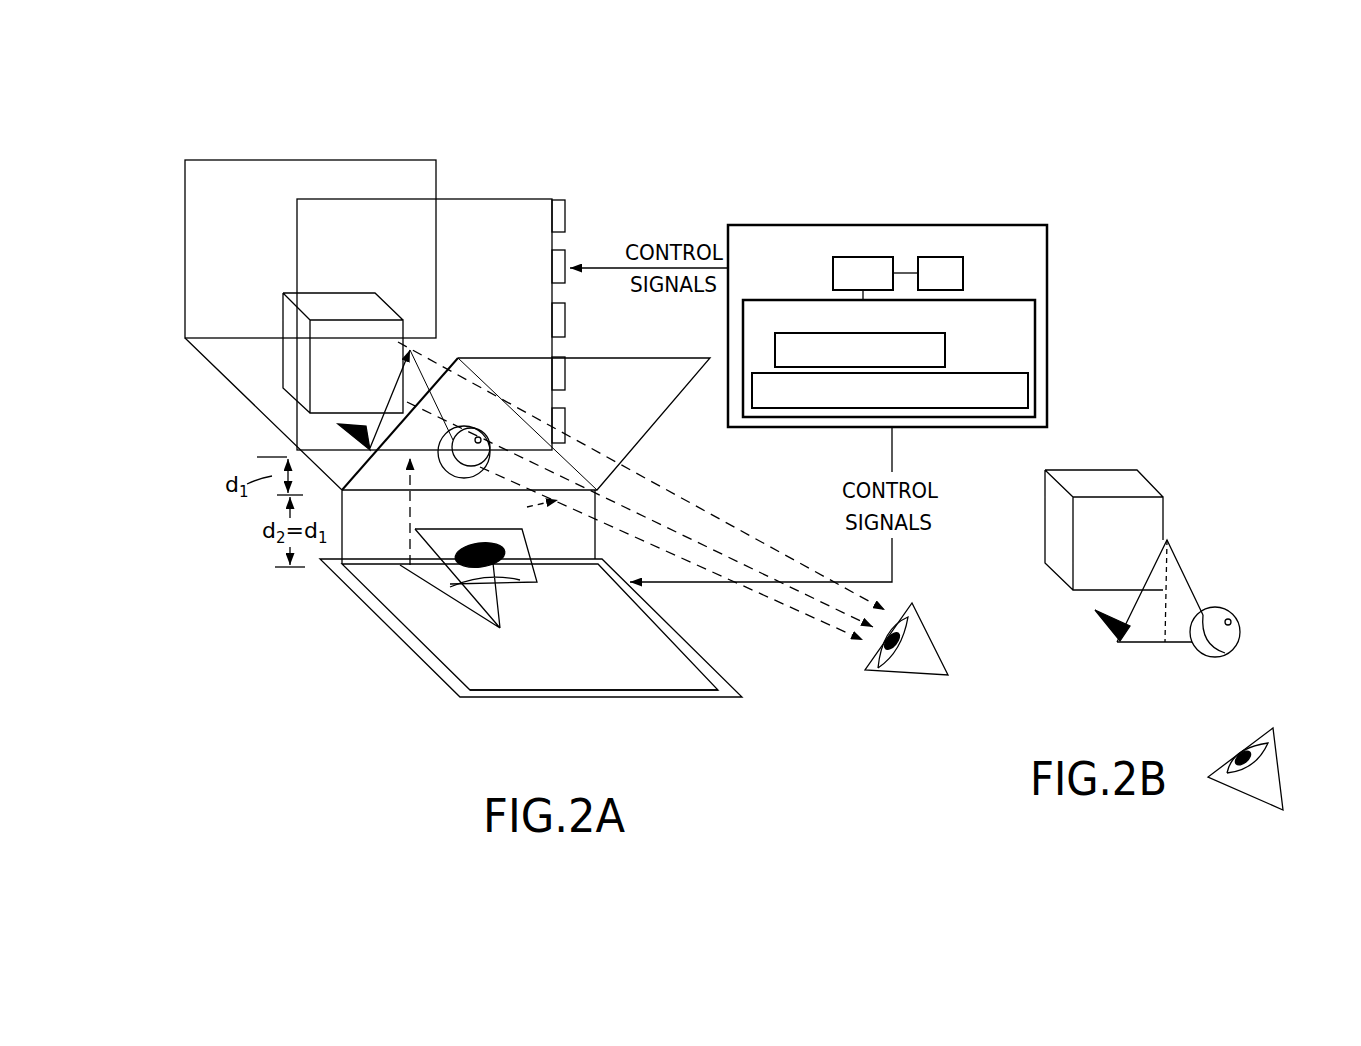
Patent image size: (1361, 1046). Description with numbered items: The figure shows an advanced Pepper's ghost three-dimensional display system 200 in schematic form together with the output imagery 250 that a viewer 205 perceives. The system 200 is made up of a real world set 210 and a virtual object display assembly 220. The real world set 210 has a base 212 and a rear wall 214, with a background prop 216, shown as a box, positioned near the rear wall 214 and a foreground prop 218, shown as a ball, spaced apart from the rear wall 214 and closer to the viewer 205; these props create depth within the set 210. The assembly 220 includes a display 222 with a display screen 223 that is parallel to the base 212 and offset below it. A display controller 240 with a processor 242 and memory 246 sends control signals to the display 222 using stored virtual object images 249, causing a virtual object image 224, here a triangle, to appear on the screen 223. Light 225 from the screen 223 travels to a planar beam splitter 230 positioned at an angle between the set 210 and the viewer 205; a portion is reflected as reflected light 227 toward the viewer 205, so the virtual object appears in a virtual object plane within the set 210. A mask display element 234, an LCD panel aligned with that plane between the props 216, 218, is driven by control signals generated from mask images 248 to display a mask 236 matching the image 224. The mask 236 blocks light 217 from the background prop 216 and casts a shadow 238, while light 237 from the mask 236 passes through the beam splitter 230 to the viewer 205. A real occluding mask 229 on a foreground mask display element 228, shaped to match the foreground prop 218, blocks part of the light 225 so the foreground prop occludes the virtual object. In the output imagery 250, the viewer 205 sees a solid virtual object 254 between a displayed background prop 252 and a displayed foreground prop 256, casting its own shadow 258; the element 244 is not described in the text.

In FIG. 2A, the 3D display system 200 is at (182, 147).
In FIG. 2A, the viewer 205 is at (930, 612).
In FIG. 2B, the viewer 205 is at (1245, 795).
In FIG. 2A, the real world set 210 is at (162, 280).
In FIG. 2A, the base 212 is at (213, 368).
In FIG. 2A, the rear wall 214 is at (185, 240).
In FIG. 2A, the background prop 216 is at (350, 293).
In FIG. 2A, the light 217 is at (735, 527).
In FIG. 2A, the foreground prop 218 is at (490, 438).
In FIG. 2A, the virtual object display assembly 220 is at (345, 633).
In FIG. 2A, the display 222 is at (738, 680).
In FIG. 2A, the display screen 223 is at (625, 680).
In FIG. 2A, the virtual object image 224 is at (502, 628).
In FIG. 2A, the light 225 is at (408, 512).
In FIG. 2A, the reflected light 227 is at (517, 509).
In FIG. 2A, the foreground mask display element 228 is at (450, 568).
In FIG. 2A, the real occluding mask 229 is at (520, 582).
In FIG. 2A, the beam splitter 230 is at (652, 358).
In FIG. 2A, the mask display element 234 is at (565, 242).
In FIG. 2A, the mask 236 is at (428, 363).
In FIG. 2A, the light 237 is at (637, 498).
In FIG. 2A, the shadow 238 is at (350, 440).
In FIG. 2A, the display controller 240 is at (853, 225).
In FIG. 2A, the processor 242 is at (833, 270).
In FIG. 2A, the I/O 244 is at (965, 275).
In FIG. 2A, the memory 246 is at (1036, 317).
In FIG. 2A, the mask images 248 is at (946, 350).
In FIG. 2A, the virtual object images 249 is at (977, 408).
In FIG. 2B, the output imagery 250 is at (1158, 442).
In FIG. 2B, the displayed background prop 252 is at (1150, 488).
In FIG. 2B, the virtual object 254 is at (1185, 575).
In FIG. 2B, the displayed foreground prop 256 is at (1240, 625).
In FIG. 2B, the shadow 258 is at (1100, 626).